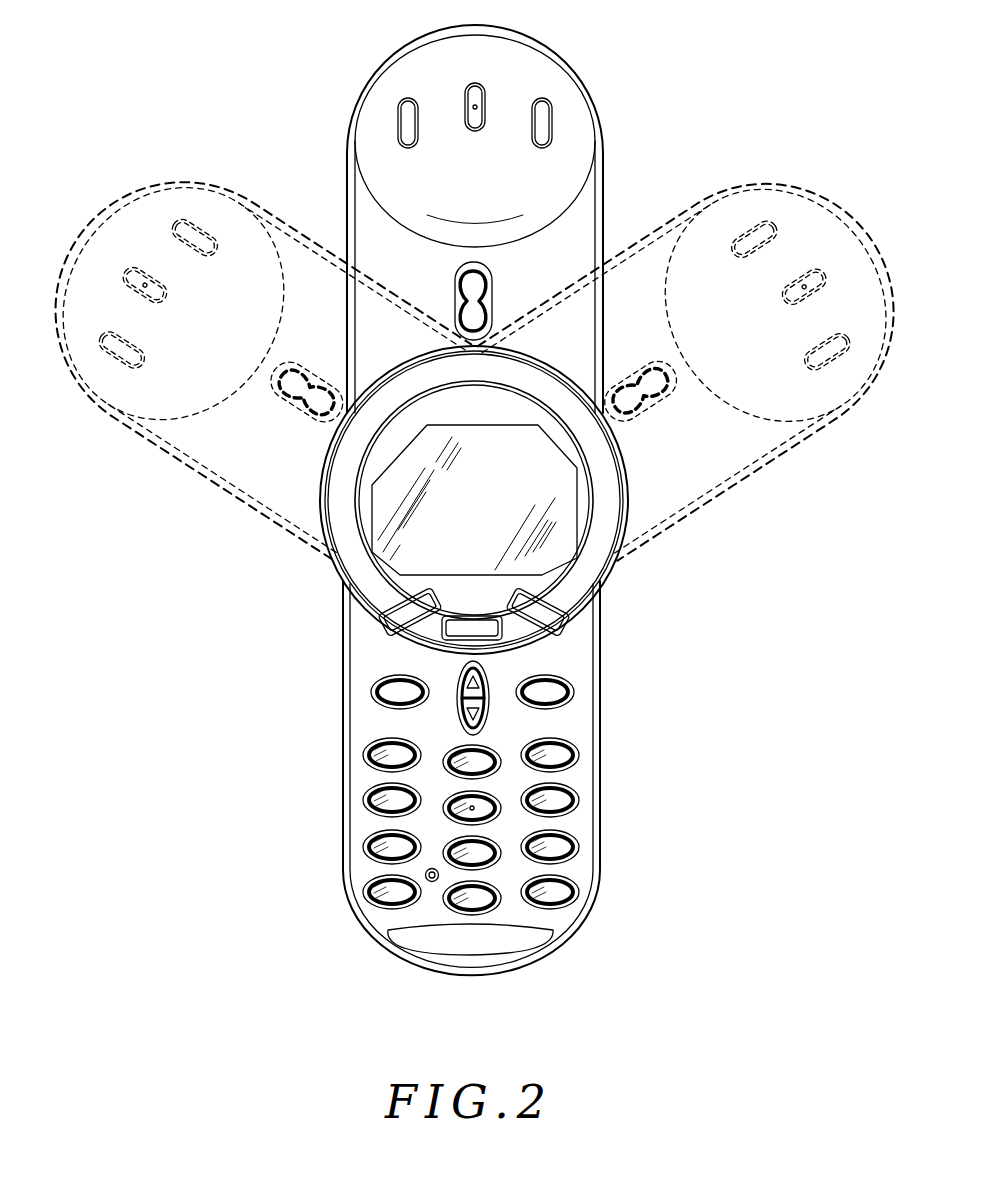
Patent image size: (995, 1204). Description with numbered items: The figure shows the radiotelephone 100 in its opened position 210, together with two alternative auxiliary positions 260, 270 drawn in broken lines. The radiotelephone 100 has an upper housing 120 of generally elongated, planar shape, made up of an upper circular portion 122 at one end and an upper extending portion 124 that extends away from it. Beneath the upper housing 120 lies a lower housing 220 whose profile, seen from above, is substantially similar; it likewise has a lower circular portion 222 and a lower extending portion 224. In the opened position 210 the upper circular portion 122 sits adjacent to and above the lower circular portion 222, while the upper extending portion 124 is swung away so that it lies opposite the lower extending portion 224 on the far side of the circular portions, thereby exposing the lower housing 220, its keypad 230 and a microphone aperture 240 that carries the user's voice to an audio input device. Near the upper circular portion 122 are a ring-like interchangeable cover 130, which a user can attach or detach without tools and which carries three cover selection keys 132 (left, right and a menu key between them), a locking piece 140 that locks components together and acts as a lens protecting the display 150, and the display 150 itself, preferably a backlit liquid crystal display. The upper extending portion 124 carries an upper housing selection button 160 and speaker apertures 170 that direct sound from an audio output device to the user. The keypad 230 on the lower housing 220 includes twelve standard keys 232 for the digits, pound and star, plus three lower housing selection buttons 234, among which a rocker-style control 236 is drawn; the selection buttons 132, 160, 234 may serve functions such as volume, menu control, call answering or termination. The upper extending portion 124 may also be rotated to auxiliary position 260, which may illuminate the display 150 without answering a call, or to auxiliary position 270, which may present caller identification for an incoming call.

The radiotelephone 100 is at (217, 73).
The upper housing 120 is at (604, 187).
The upper circular portion 122 is at (628, 483).
The upper extending portion 124 is at (604, 150).
The interchangeable cover 130 is at (595, 454).
The cover selection keys 132 is at (398, 606).
The locking piece 140 is at (460, 412).
The display 150 is at (472, 491).
The upper housing selection button 160 is at (479, 307).
The speaker apertures 170 is at (409, 110).
The opened position 210 is at (631, 121).
The lower housing 220 is at (342, 797).
The lower circular portion 222 is at (320, 479).
The lower extending portion 224 is at (341, 831).
The keypad 230 is at (371, 723).
The standard keys 232 is at (605, 740).
The lower housing selection buttons 234 is at (605, 650).
The navigation rocker key 236 is at (463, 718).
The microphone aperture 240 is at (425, 875).
The auxiliary position 260 is at (157, 195).
The auxiliary position 270 is at (795, 197).